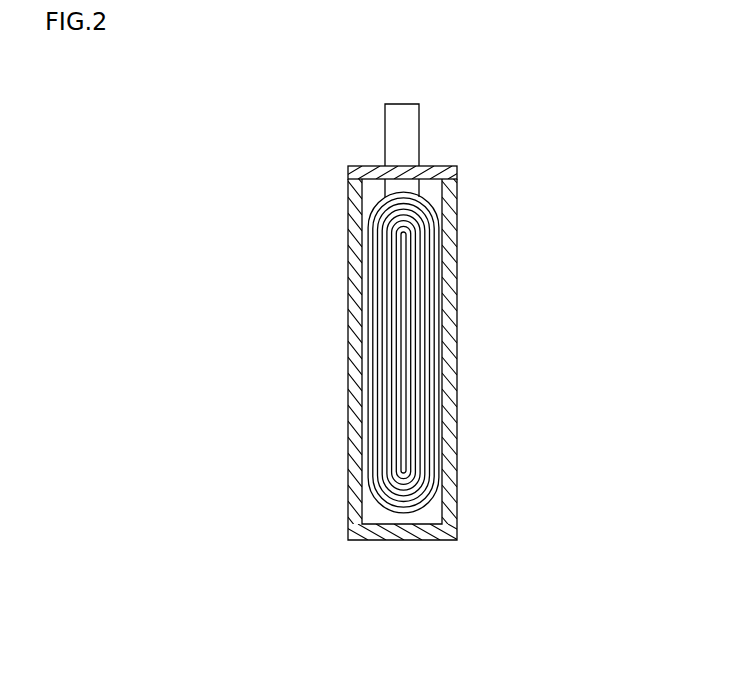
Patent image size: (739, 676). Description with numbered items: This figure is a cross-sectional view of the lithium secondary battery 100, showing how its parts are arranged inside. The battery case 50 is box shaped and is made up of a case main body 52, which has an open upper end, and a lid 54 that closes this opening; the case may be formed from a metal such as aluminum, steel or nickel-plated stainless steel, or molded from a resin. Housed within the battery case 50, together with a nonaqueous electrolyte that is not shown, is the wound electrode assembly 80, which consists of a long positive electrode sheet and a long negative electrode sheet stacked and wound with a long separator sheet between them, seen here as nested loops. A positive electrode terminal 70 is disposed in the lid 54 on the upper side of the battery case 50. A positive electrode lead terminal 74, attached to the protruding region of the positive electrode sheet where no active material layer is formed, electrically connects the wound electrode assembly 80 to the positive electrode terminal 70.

The lithium secondary battery 100 is at (572, 60).
The battery case 50 is at (346, 416).
The case main body 52 is at (452, 469).
The lid 54 is at (433, 166).
The positive electrode terminal 70 is at (413, 104).
The positive electrode lead terminal 74 is at (392, 190).
The wound electrode assembly 80 is at (378, 508).